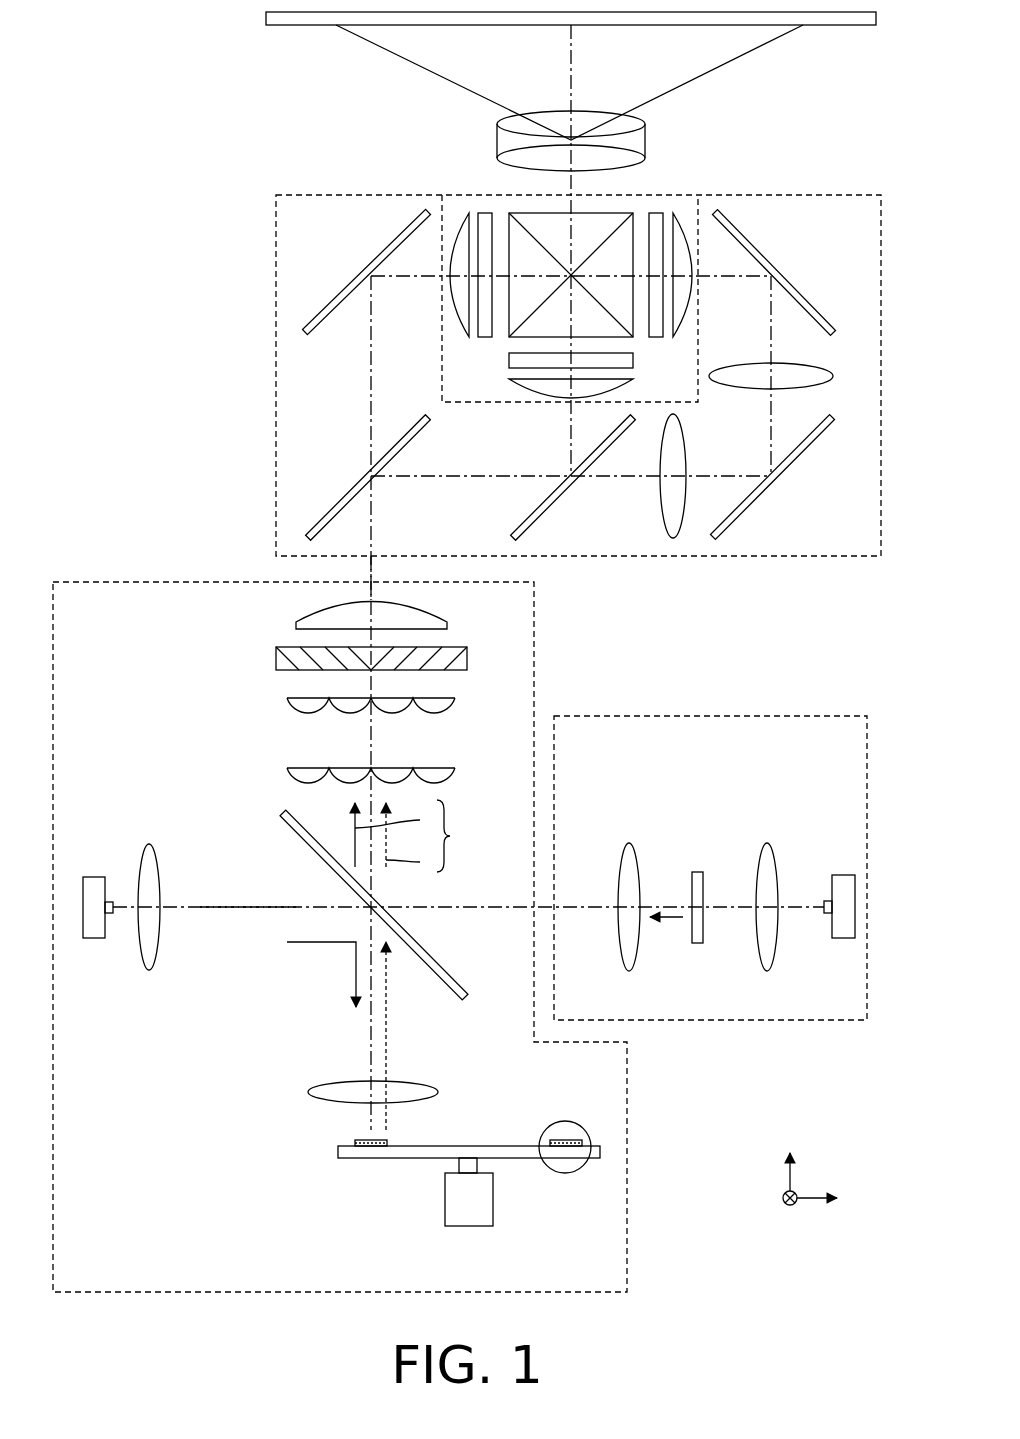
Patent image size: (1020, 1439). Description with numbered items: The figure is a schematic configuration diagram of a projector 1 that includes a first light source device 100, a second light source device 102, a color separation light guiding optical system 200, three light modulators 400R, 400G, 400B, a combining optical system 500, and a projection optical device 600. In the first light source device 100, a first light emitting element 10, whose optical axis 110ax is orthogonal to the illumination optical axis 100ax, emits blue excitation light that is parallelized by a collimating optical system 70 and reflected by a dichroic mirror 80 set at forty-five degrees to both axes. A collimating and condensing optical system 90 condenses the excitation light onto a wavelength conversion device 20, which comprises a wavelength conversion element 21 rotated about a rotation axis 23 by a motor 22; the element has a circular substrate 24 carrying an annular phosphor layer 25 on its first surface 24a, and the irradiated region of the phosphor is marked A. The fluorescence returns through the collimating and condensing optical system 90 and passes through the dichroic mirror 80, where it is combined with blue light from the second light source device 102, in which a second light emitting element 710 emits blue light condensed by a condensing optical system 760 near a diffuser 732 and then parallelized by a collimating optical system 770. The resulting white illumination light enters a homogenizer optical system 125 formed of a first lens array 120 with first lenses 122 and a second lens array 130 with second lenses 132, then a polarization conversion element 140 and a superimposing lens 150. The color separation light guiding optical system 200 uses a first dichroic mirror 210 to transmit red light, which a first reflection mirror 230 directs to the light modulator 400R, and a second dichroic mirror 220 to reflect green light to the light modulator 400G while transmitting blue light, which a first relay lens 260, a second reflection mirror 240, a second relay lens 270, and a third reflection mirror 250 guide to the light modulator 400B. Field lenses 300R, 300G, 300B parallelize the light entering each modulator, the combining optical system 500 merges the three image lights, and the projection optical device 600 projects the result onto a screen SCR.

The projector 1 is at (232, 112).
The screen SCR is at (845, 27).
The projection optical device 600 is at (497, 140).
The combining optical system 500 is at (622, 213).
The light modulator 400R is at (485, 213).
The light modulator 400G is at (509, 361).
The light modulator 400B is at (660, 213).
The field lens 300R is at (456, 213).
The field lens 300G is at (520, 392).
The field lens 300B is at (676, 213).
The color separation light guiding optical system 200 is at (822, 557).
The first dichroic mirror 210 is at (340, 512).
The second dichroic mirror 220 is at (546, 516).
The first reflection mirror 230 is at (313, 326).
The second reflection mirror 240 is at (796, 462).
The third reflection mirror 250 is at (828, 324).
The first relay lens 260 is at (660, 496).
The second relay lens 270 is at (800, 364).
The first light source device 100 is at (627, 1210).
The illumination optical axis 100ax is at (368, 573).
The optical axis 110ax is at (235, 910).
The first light emitting element 10 is at (118, 868).
The collimating optical system 70 is at (152, 846).
The dichroic mirror 80 is at (455, 972).
The collimating and condensing optical system 90 is at (316, 1098).
The wavelength conversion device 20 is at (507, 1155).
The wavelength conversion element 21 is at (507, 1114).
The motor 22 is at (493, 1210).
The rotation axis 23 is at (478, 1165).
The substrate 24 is at (490, 1150).
The first surface 24a is at (442, 1146).
The phosphor layer 25 is at (590, 1136).
The region A is at (578, 1122).
The first lens array 120 is at (403, 743).
The first lenses 122 is at (292, 776).
The second lens array 130 is at (403, 689).
The second lenses 132 is at (292, 706).
The homogenizer optical system 125 is at (436, 723).
The polarization conversion element 140 is at (457, 648).
The superimposing lens 150 is at (447, 612).
The second light source device 102 is at (820, 1022).
The second light emitting element 710 is at (832, 872).
The diffuser 732 is at (697, 872).
The condensing optical system 760 is at (767, 845).
The collimating optical system 770 is at (630, 845).